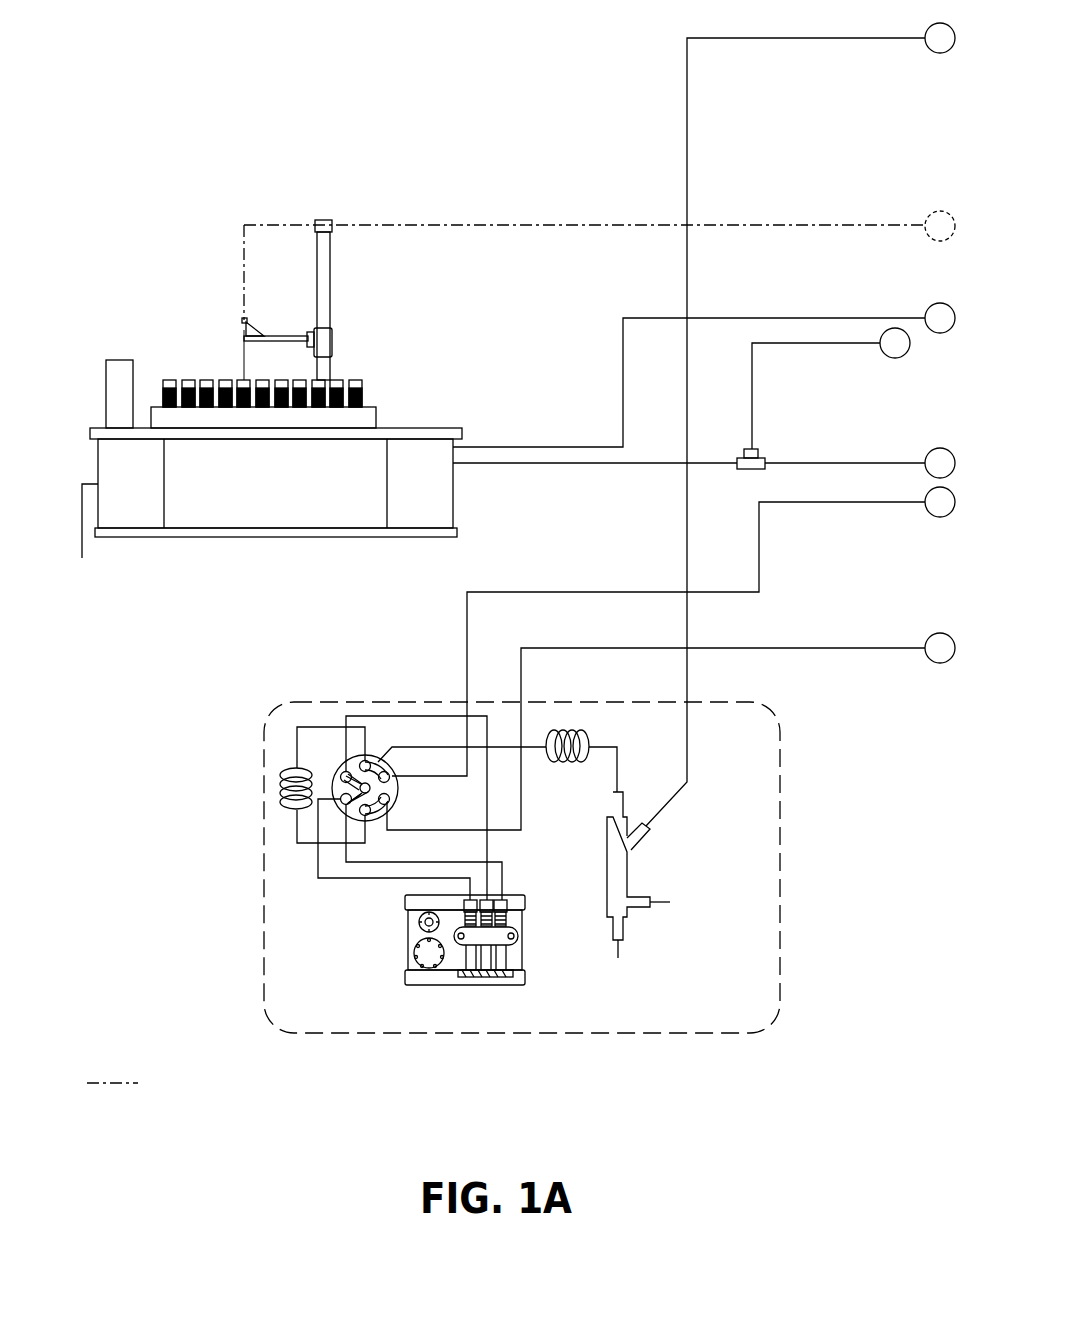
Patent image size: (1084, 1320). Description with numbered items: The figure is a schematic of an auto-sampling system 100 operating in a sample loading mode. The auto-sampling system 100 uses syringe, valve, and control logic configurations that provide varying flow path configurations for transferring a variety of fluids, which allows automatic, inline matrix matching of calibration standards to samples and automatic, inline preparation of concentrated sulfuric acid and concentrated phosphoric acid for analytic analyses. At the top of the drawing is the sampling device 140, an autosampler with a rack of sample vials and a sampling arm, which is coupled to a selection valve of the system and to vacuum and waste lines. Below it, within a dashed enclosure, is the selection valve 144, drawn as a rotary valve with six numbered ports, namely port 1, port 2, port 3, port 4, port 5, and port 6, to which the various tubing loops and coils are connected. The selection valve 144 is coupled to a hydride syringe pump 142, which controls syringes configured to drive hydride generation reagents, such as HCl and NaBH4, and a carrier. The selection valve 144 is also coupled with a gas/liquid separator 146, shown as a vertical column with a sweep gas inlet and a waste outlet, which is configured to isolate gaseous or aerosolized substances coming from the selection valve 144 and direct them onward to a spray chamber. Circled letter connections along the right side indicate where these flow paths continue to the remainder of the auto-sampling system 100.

The auto-sampling system 100 is at (168, 150).
The sampling device 140 is at (420, 428).
The hydride syringe pump 142 is at (513, 893).
The selection valve 144 is at (342, 767).
The gas/liquid separator 146 is at (628, 873).
The valve port 1 is at (373, 829).
The valve port 2 is at (336, 816).
The valve port 3 is at (333, 768).
The valve port 4 is at (371, 750).
The valve port 5 is at (396, 767).
The valve port 6 is at (396, 813).